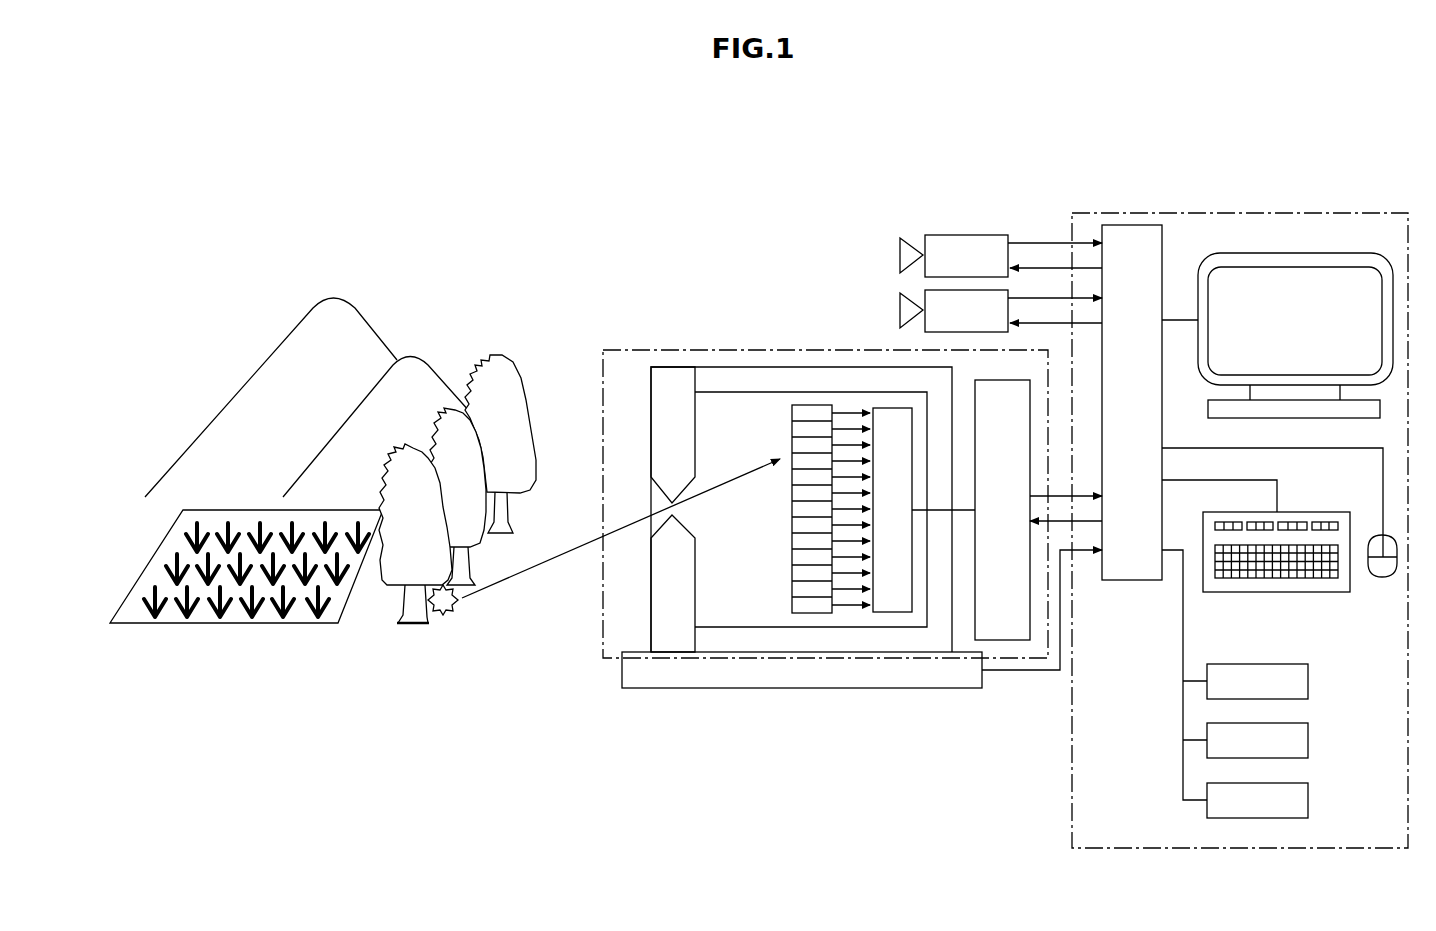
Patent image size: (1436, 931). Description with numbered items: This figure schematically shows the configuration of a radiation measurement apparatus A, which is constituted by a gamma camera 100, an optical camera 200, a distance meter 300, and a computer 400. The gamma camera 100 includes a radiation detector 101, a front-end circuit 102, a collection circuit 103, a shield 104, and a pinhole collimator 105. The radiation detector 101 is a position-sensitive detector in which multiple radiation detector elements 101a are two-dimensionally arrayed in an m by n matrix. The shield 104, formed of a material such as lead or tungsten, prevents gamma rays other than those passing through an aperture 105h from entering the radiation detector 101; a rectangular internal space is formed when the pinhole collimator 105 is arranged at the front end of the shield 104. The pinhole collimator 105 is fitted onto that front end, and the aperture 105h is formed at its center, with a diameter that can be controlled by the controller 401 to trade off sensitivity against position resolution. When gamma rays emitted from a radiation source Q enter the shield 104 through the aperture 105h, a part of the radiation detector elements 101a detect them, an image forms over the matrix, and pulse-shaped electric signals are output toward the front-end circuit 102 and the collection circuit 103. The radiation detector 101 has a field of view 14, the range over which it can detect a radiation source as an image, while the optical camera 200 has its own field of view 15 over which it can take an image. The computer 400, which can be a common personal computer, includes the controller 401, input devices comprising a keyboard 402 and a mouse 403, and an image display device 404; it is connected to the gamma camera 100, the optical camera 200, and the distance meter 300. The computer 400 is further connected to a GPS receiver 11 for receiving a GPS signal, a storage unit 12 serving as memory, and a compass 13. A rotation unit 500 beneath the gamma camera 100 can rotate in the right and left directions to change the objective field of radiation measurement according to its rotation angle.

The gamma camera 100 is at (783, 347).
The radiation detector 101 is at (778, 538).
The radiation detector elements 101a is at (808, 405).
The front-end circuit 102 is at (895, 613).
The collection circuit 103 is at (997, 627).
The shield 104 is at (742, 380).
The pinhole collimator 105 is at (675, 377).
The aperture 105h is at (653, 503).
The rotation unit 500 is at (684, 677).
The field of view 14 is at (590, 520).
The field of view 15 is at (888, 298).
The optical camera 200 is at (963, 300).
The distance meter 300 is at (980, 245).
The computer 400 is at (1348, 212).
The controller 401 is at (1140, 580).
The keyboard 402 is at (1267, 592).
The mouse 403 is at (1380, 577).
The image display device 404 is at (1272, 275).
The GPS receiver 11 is at (1308, 678).
The storage unit 12 is at (1308, 738).
The compass 13 is at (1308, 798).
The radiation source Q is at (442, 622).
The radiation measurement apparatus A is at (1292, 153).